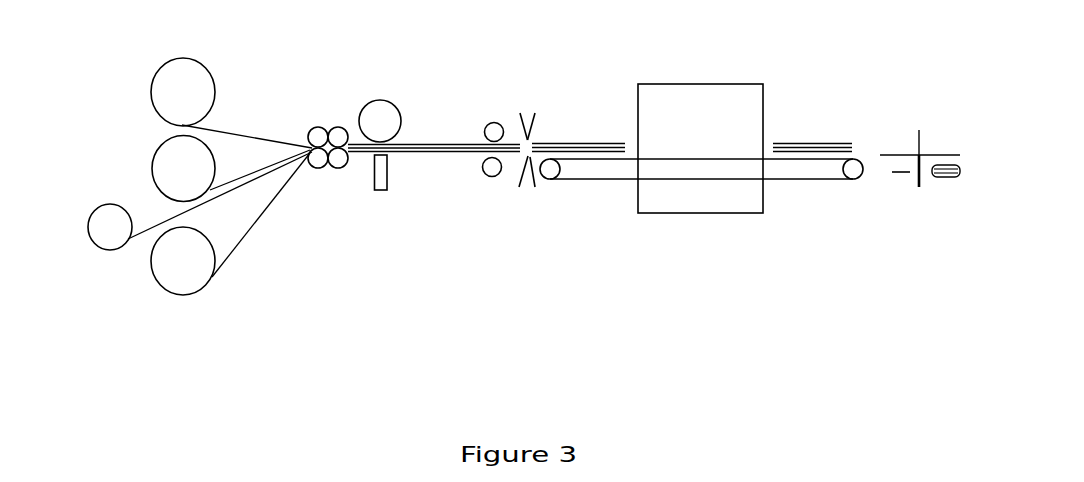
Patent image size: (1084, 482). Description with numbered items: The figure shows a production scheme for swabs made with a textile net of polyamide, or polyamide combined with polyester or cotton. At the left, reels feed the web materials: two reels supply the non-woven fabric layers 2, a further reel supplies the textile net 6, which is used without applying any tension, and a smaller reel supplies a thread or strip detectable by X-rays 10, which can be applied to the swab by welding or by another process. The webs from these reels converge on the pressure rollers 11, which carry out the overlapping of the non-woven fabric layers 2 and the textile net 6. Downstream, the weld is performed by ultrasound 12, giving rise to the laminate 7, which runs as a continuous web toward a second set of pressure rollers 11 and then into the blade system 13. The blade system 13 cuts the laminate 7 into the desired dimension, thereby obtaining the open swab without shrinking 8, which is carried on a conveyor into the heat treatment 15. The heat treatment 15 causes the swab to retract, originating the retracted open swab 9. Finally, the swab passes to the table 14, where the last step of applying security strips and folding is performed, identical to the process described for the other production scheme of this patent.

The non-woven fabric layers 2 is at (155, 90).
The textile net 6 is at (155, 170).
The thread or strip detectable by X-rays 10 is at (88, 228).
The pressure rollers 11 is at (328, 125).
The ultrasound 12 is at (382, 117).
The laminate 7 is at (446, 143).
The blade system 13 is at (528, 140).
The open swab without shrinking 8 is at (588, 142).
The heat treatment 15 is at (700, 84).
The retracted open swab 9 is at (815, 142).
The table 14 is at (918, 120).